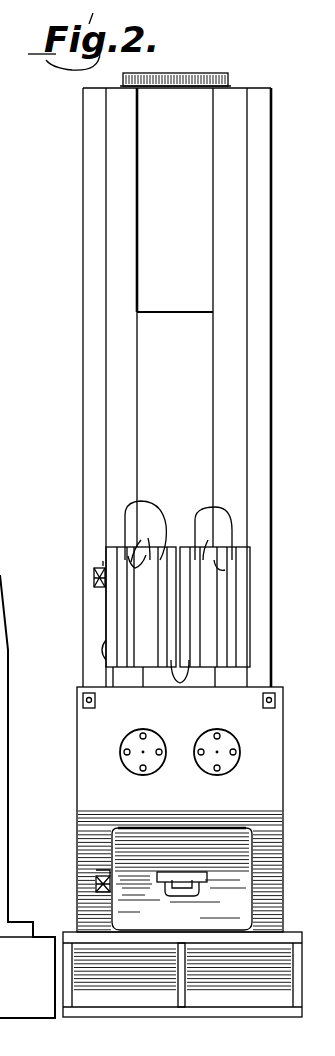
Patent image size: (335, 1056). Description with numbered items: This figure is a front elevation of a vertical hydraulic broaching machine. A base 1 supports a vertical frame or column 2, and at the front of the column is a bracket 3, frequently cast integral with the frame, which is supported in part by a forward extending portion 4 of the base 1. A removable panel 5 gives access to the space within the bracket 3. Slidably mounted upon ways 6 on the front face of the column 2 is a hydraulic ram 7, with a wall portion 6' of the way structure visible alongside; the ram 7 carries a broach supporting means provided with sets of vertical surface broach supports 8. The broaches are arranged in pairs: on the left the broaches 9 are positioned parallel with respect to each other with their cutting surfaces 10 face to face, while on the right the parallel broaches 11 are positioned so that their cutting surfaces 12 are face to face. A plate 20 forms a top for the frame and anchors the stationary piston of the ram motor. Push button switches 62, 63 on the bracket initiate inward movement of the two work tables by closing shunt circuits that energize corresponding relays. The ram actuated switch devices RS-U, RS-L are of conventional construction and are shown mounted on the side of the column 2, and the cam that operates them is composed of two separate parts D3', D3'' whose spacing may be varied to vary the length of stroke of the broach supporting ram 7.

The base 1 is at (153, 1010).
The vertical frame or column 2 is at (83, 183).
The bracket 3 is at (95, 795).
The forward extending portion 4 is at (186, 988).
The removable panel 5 is at (232, 912).
The ways 6 is at (181, 317).
The inner tube wall 6' is at (147, 200).
The hydraulic ram 7 is at (150, 371).
The vertical surface broach supports 8 is at (180, 675).
The broaches 9 is at (135, 511).
The cutting surfaces 10 is at (144, 544).
The parallel broaches 11 is at (215, 509).
The cutting surfaces 12 is at (211, 547).
The plate 20 is at (214, 74).
The push button switch 62 is at (83, 704).
The push button switch 63 is at (263, 702).
The cam part D3'' is at (76, 561).
The cam part D3' is at (96, 772).
The ram actuated switch device RS-U is at (95, 583).
The ram actuated switch device RS-L is at (96, 877).